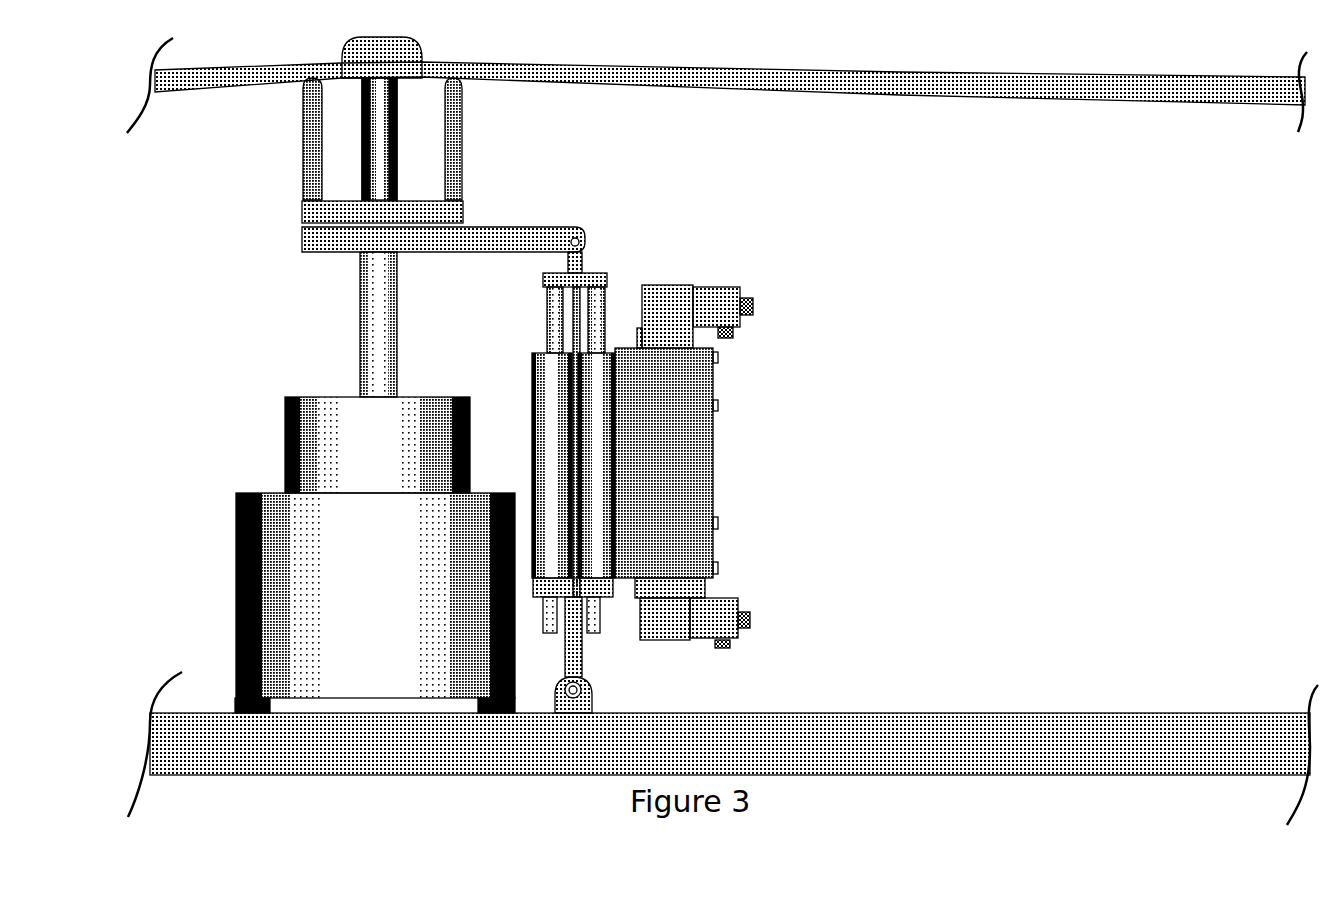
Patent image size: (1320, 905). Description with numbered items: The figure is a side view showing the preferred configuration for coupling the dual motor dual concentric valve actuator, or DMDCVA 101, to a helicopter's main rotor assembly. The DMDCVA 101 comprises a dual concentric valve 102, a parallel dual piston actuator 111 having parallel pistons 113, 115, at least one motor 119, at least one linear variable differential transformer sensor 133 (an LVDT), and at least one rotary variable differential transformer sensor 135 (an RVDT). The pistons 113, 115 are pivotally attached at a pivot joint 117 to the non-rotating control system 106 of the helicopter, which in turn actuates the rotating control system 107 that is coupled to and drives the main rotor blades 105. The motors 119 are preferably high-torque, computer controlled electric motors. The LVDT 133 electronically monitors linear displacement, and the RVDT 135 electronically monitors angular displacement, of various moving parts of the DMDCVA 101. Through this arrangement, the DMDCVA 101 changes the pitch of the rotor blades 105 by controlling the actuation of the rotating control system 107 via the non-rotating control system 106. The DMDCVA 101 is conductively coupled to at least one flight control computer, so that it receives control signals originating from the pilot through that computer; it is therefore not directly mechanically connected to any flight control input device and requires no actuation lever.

The dual motor dual concentric valve actuator 101 is at (734, 428).
The dual concentric valve 102 is at (721, 439).
The main rotor blades 105 is at (235, 88).
The non-rotating control system 106 is at (518, 228).
The rotating control system 107 is at (487, 171).
The parallel dual piston actuator 111 is at (578, 474).
The piston 113 is at (553, 315).
The piston 115 is at (598, 315).
The pivot joint 117 is at (586, 256).
The motor 119 is at (727, 278).
The linear variable differential transformer sensor 133 is at (562, 452).
The rotary variable differential transformer sensor 135 is at (755, 305).